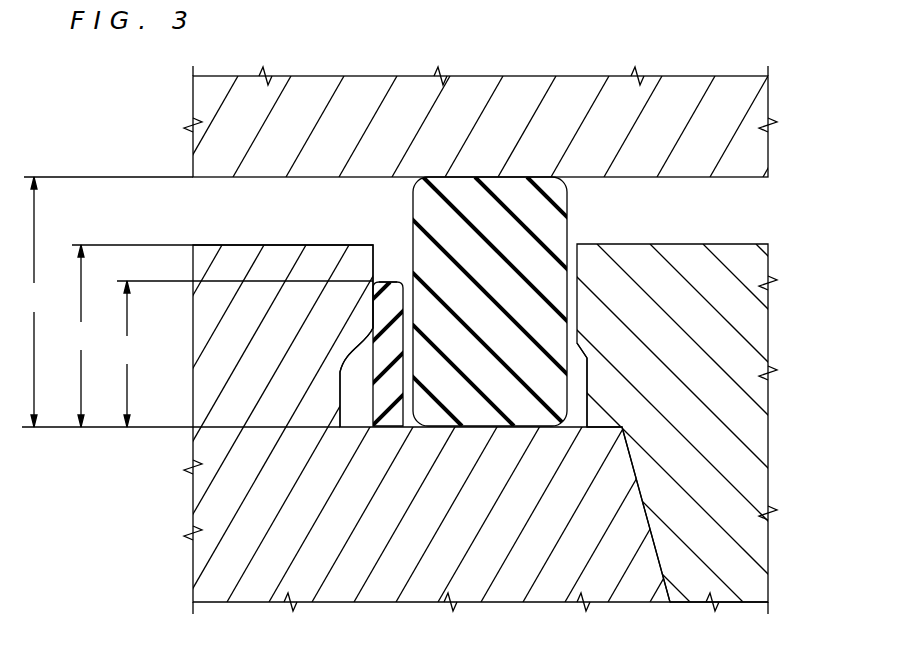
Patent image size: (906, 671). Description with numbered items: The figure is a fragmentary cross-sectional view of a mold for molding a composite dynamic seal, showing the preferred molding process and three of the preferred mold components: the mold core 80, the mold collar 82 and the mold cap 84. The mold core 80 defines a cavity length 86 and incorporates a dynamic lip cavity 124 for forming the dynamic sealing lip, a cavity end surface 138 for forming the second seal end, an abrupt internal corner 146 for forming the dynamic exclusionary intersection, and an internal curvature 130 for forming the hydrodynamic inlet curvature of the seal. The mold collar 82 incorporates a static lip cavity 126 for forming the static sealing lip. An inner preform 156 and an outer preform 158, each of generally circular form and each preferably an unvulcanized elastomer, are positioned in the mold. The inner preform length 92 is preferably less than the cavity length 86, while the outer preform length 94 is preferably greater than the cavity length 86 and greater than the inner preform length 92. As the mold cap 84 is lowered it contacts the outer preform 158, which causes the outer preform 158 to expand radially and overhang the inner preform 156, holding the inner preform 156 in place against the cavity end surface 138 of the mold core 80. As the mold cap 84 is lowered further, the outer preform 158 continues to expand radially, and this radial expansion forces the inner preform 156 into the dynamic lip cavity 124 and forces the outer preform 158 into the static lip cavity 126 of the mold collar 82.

The mold core 80 is at (230, 573).
The mold collar 82 is at (725, 403).
The mold cap 84 is at (748, 148).
The cavity length 86 is at (131, 336).
The inner preform length 92 is at (244, 354).
The outer preform length 94 is at (181, 302).
The dynamic lip cavity 124 is at (352, 400).
The static lip cavity 126 is at (580, 377).
The internal curvature 130 is at (340, 368).
The cavity end surface 138 is at (590, 402).
The abrupt internal corner 146 is at (362, 432).
The inner preform 156 is at (392, 280).
The outer preform 158 is at (567, 228).